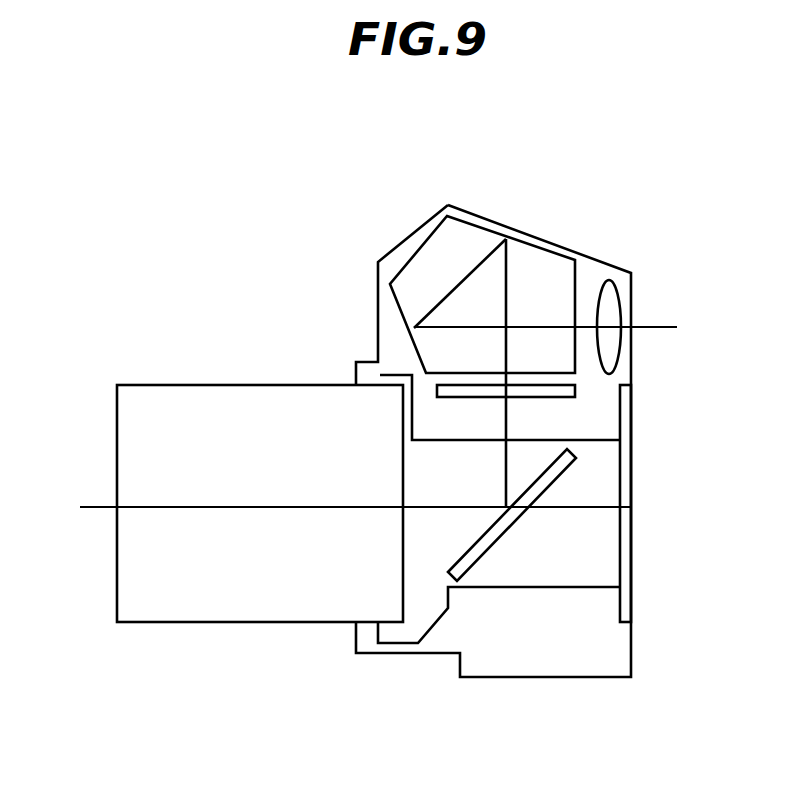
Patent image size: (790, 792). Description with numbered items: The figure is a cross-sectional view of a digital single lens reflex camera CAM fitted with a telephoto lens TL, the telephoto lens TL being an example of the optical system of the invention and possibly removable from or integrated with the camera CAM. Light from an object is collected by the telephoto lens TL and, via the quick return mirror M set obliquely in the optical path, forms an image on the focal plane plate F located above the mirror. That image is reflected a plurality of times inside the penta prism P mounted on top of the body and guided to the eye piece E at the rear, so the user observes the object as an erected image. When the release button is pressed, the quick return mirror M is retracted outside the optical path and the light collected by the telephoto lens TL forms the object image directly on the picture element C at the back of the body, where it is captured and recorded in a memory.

The digital single lens reflex camera CAM is at (205, 290).
The telephoto lens TL is at (192, 398).
The penta prism P is at (517, 255).
The eye piece E is at (607, 307).
The focal plane plate F is at (577, 398).
The picture element C is at (627, 488).
The quick return mirror M is at (498, 538).